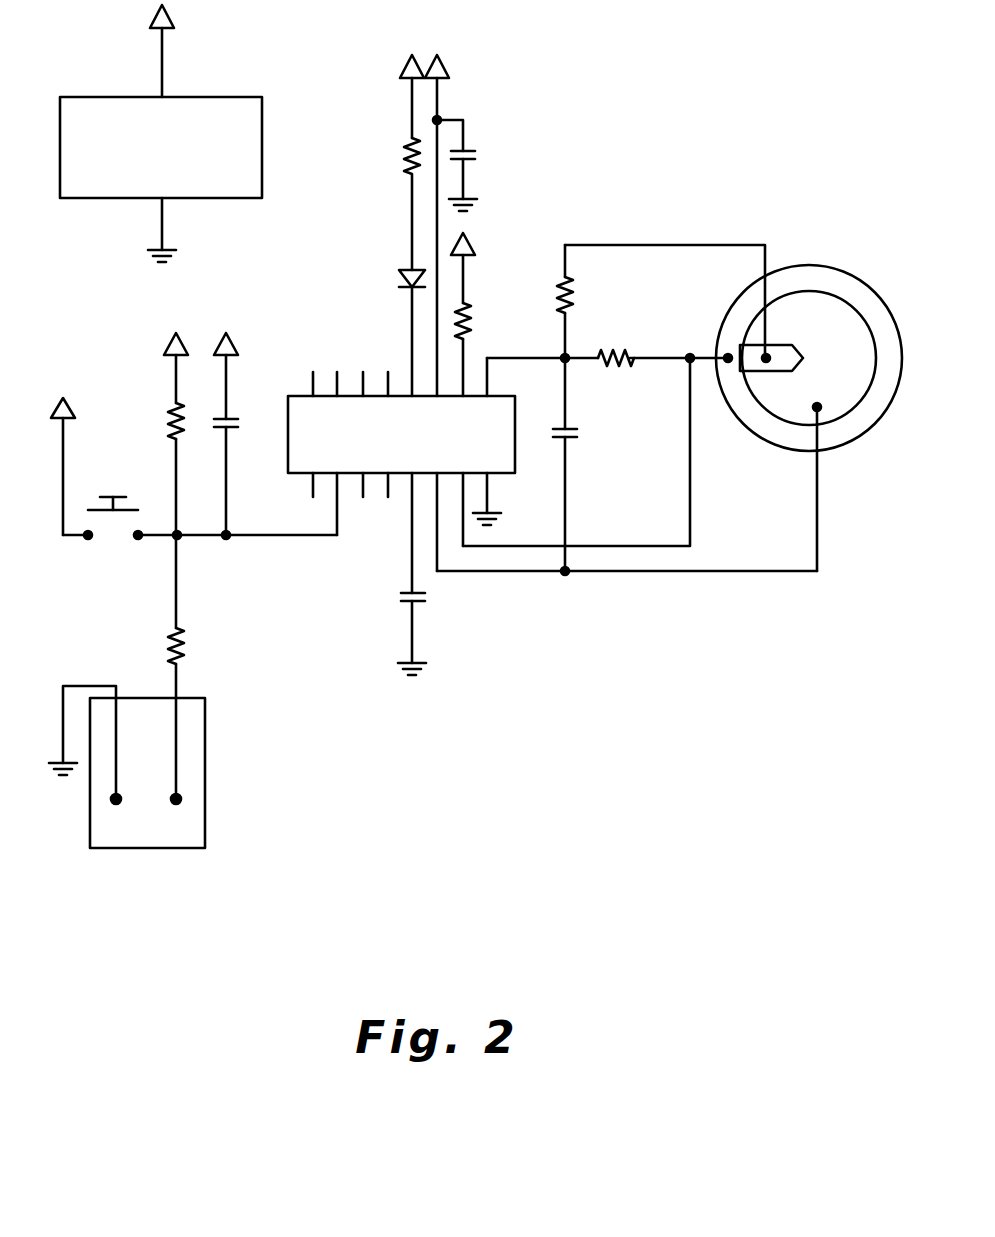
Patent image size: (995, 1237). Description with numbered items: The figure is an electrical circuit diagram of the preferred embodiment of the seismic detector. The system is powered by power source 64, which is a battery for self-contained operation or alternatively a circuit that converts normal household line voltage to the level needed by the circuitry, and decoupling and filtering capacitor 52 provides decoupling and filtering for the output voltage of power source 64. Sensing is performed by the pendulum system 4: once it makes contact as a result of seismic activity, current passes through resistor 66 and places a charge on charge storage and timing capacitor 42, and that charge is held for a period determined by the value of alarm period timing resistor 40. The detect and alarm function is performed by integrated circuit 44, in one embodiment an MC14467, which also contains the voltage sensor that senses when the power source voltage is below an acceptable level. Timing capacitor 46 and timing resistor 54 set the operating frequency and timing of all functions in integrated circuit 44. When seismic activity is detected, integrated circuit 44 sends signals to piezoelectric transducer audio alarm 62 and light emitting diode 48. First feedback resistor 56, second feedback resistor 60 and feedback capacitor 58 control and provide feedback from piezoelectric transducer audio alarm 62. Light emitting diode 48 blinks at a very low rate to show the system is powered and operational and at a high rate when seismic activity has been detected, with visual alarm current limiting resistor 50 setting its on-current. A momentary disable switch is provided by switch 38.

The pendulum system 4 is at (215, 776).
The switch 38 is at (115, 487).
The alarm period timing resistor 40 is at (164, 385).
The charge storage and timing capacitor 42 is at (250, 414).
The integrated circuit 44 is at (516, 474).
The timing capacitor 46 is at (393, 592).
The light emitting diode 48 is at (392, 280).
The visual alarm current limiting resistor 50 is at (400, 154).
The decoupling and filtering capacitor 52 is at (487, 162).
The timing resistor 54 is at (478, 325).
The first feedback resistor 56 is at (557, 282).
The feedback capacitor 58 is at (590, 437).
The second feedback resistor 60 is at (620, 350).
The piezoelectric transducer audio alarm 62 is at (818, 247).
The power source 64 is at (224, 87).
The resistor 66 is at (200, 650).